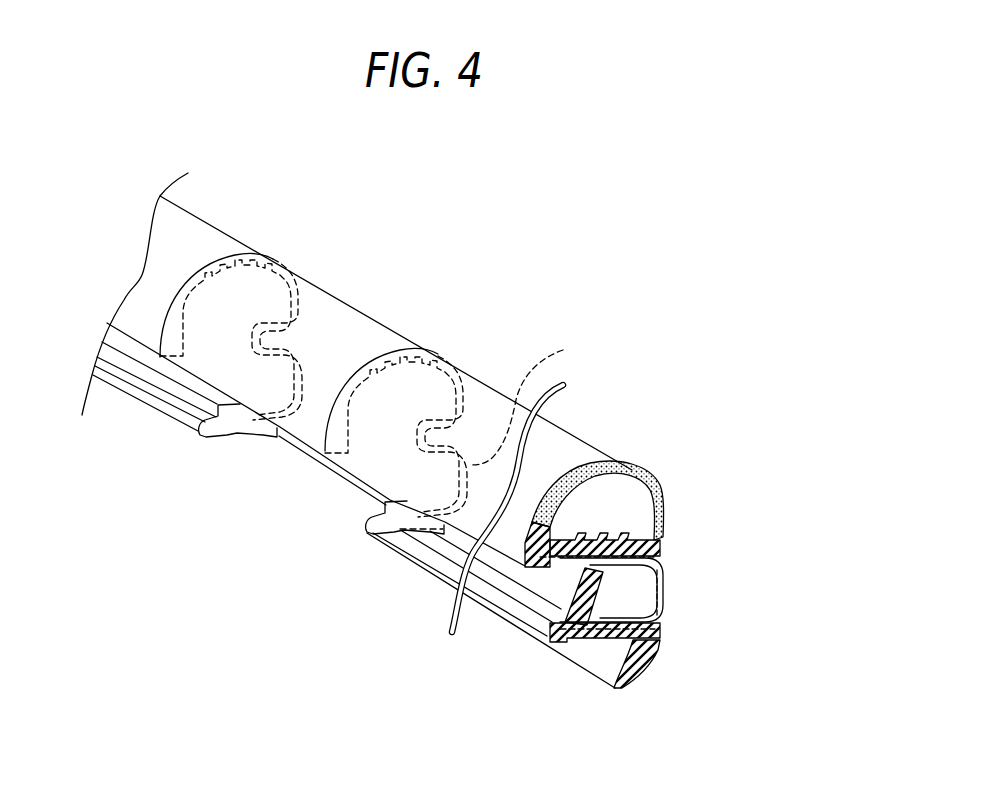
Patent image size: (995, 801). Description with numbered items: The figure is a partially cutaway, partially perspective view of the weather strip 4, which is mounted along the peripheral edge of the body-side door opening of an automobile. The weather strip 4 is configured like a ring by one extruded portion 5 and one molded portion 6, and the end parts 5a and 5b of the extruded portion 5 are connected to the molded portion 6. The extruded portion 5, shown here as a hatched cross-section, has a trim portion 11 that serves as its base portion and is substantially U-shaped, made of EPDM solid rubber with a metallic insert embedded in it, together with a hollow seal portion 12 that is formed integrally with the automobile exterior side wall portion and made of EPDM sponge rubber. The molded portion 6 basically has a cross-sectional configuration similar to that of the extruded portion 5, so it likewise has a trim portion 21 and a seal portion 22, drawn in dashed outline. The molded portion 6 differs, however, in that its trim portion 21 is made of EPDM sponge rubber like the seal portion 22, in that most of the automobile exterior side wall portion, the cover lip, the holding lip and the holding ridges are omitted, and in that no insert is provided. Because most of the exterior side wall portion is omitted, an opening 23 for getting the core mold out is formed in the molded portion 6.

The weather strip 4 is at (452, 218).
The extruded portion 5 is at (222, 207).
The end part 5a is at (245, 240).
The end part 5b is at (467, 367).
The molded portion 6 is at (352, 280).
The trim portion 11 is at (667, 578).
The hollow seal portion 12 is at (663, 485).
The trim portion 21 is at (520, 485).
The seal portion 22 is at (365, 335).
The opening 23 is at (222, 362).